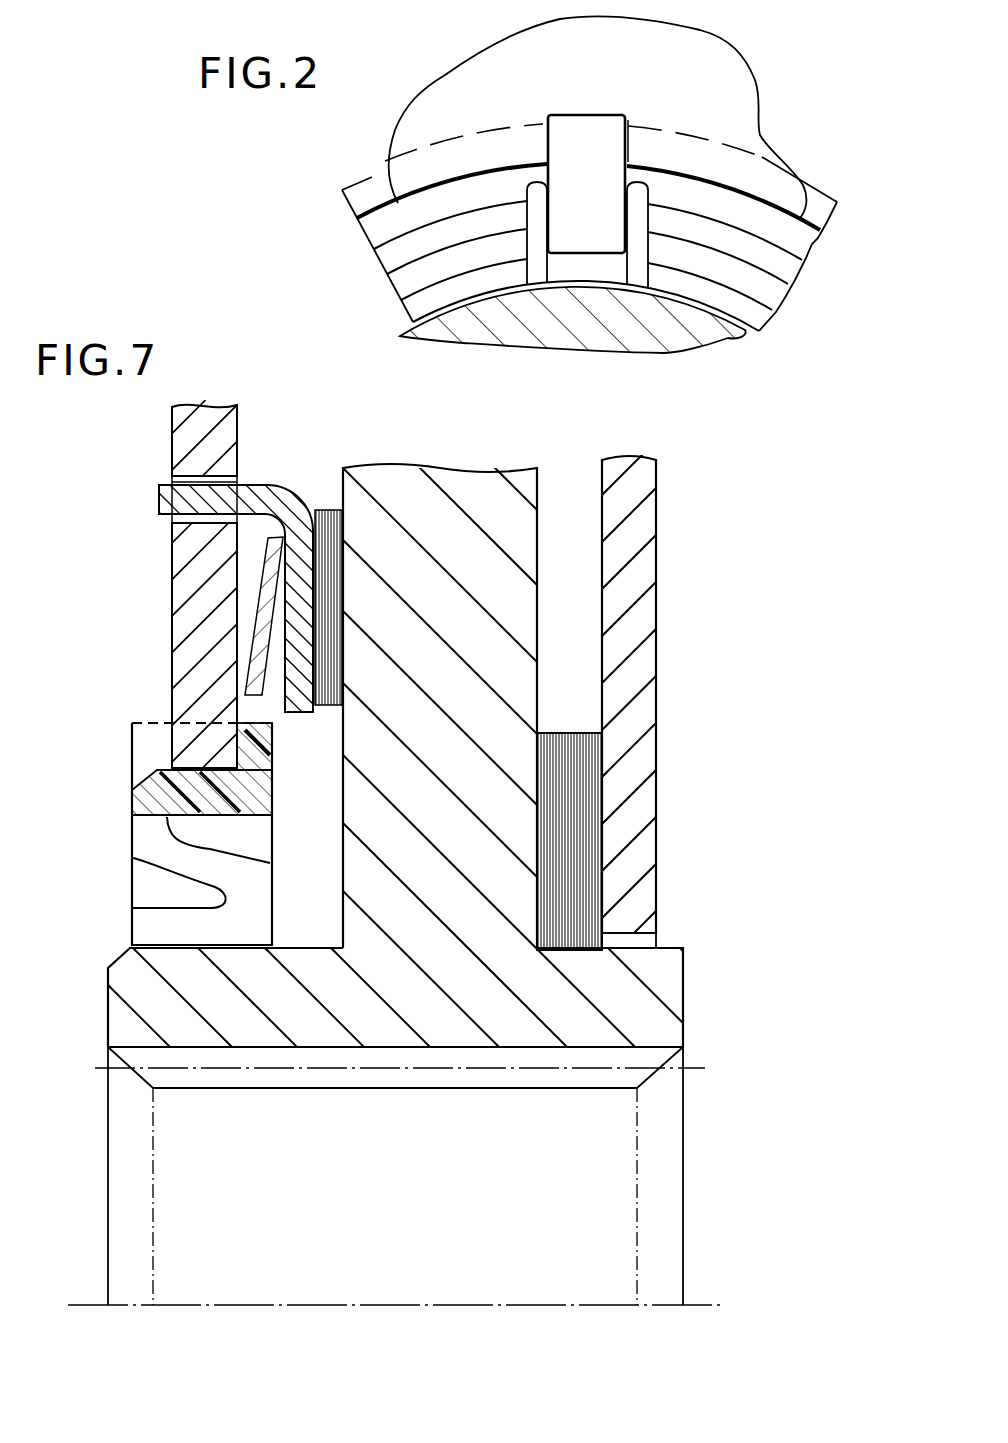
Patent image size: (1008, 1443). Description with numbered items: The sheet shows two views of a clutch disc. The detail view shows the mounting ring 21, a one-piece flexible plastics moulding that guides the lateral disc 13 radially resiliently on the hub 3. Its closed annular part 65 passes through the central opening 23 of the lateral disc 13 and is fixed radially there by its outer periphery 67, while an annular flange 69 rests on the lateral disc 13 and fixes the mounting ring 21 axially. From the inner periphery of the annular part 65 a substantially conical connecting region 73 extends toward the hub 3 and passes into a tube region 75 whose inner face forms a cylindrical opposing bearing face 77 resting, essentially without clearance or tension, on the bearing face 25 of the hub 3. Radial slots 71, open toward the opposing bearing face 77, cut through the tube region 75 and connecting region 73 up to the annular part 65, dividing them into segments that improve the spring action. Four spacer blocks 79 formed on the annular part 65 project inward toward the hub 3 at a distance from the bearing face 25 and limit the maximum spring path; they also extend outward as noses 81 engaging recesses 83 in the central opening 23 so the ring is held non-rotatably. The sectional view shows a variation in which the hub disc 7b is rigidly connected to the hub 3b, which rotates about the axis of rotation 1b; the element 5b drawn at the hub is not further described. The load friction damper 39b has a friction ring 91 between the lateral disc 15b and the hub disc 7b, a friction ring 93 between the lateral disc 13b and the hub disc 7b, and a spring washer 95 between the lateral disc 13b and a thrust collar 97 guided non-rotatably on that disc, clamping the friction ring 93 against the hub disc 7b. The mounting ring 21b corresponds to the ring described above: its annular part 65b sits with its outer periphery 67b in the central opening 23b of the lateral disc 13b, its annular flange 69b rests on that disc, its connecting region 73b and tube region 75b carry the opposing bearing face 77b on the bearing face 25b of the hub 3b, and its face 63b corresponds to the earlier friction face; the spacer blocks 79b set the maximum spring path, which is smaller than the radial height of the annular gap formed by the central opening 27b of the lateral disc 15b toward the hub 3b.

In FIG. 2, the hub 3 is at (692, 333).
In FIG. 2, the lateral disc 13 is at (743, 102).
In FIG. 2, the mounting ring 21 is at (375, 280).
In FIG. 2, the central opening 23 is at (727, 192).
In FIG. 2, the bearing face 25 is at (748, 332).
In FIG. 2, the annular part 65 is at (380, 236).
In FIG. 2, the outer periphery 67 is at (370, 217).
In FIG. 2, the annular flange 69 is at (368, 186).
In FIG. 2, the radial slots 71 is at (537, 227).
In FIG. 2, the connecting region 73 is at (393, 260).
In FIG. 2, the tube region 75 is at (418, 310).
In FIG. 2, the opposing bearing face 77 is at (703, 302).
In FIG. 2, the spacer blocks 79 is at (548, 148).
In FIG. 2, the noses 81 is at (575, 210).
In FIG. 2, the recesses 83 is at (630, 130).
In FIG. 7, the axis of rotation 1b is at (700, 1303).
In FIG. 7, the hub 3b is at (642, 1017).
In FIG. 7, the shaft bore 5b is at (592, 1082).
In FIG. 7, the hub disc 7b is at (473, 625).
In FIG. 7, the lateral disc 13b is at (188, 447).
In FIG. 7, the lateral disc 15b is at (642, 537).
In FIG. 7, the mounting ring 21b is at (110, 803).
In FIG. 7, the central opening 23b is at (258, 758).
In FIG. 7, the bearing face 25b is at (303, 905).
In FIG. 7, the central opening 27b is at (632, 940).
In FIG. 7, the load friction damper 39b is at (138, 587).
In FIG. 7, the friction face 63b is at (278, 734).
In FIG. 7, the annular part 65b is at (177, 778).
In FIG. 7, the outer periphery 67b is at (167, 767).
In FIG. 7, the annular flange 69b is at (280, 737).
In FIG. 7, the connecting region 73b is at (193, 867).
In FIG. 7, the tube region 75b is at (178, 922).
In FIG. 7, the opposing bearing face 77b is at (185, 958).
In FIG. 7, the spacer blocks 79b is at (163, 768).
In FIG. 7, the friction ring 91 is at (572, 766).
In FIG. 7, the friction ring 93 is at (325, 612).
In FIG. 7, the spring washer 95 is at (265, 588).
In FIG. 7, the thrust collar 97 is at (192, 498).